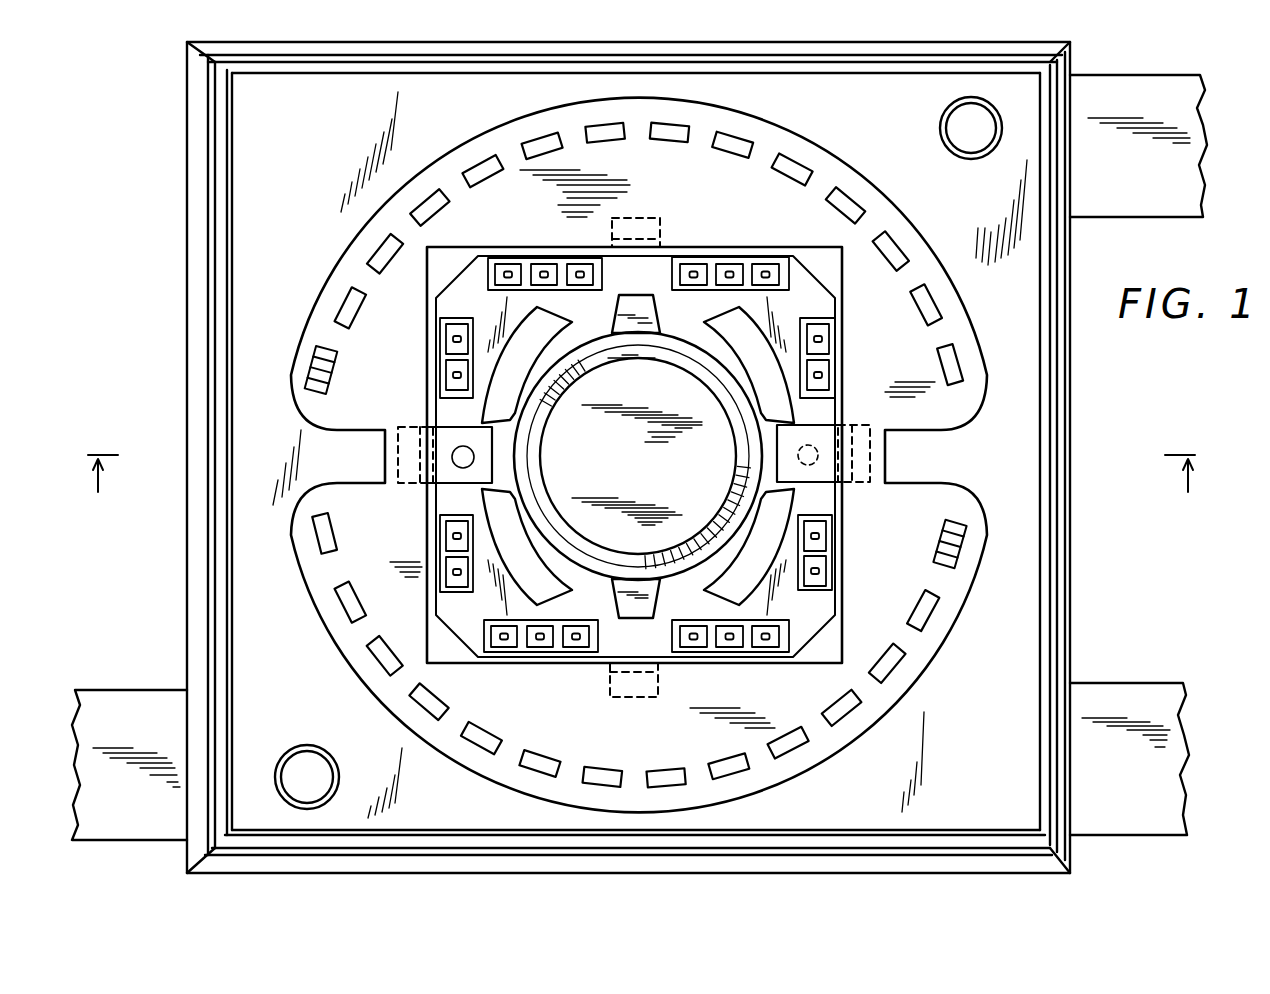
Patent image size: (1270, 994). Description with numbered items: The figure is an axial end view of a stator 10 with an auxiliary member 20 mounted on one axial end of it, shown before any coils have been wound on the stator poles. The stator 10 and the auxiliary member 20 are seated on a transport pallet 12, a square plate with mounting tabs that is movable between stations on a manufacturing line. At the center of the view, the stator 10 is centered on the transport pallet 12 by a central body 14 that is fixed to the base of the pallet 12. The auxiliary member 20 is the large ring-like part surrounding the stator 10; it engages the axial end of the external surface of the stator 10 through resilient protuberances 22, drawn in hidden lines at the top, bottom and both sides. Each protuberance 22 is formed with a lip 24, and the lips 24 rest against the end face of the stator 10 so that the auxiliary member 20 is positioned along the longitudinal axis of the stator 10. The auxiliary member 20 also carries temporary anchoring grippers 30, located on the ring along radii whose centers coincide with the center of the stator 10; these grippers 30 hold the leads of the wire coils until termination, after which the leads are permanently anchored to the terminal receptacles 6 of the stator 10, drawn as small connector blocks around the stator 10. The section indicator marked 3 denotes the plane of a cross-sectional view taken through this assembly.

The terminal receptacles 6 is at (500, 258).
The stator 10 is at (803, 632).
The transport pallet 12 is at (1070, 368).
The central body 14 is at (652, 378).
The auxiliary member 20 is at (373, 278).
The resilient protuberances 22 is at (640, 228).
The lips 24 is at (458, 476).
The temporary anchoring grippers 30 is at (313, 363).
The section line 3- 3 is at (641, 498).